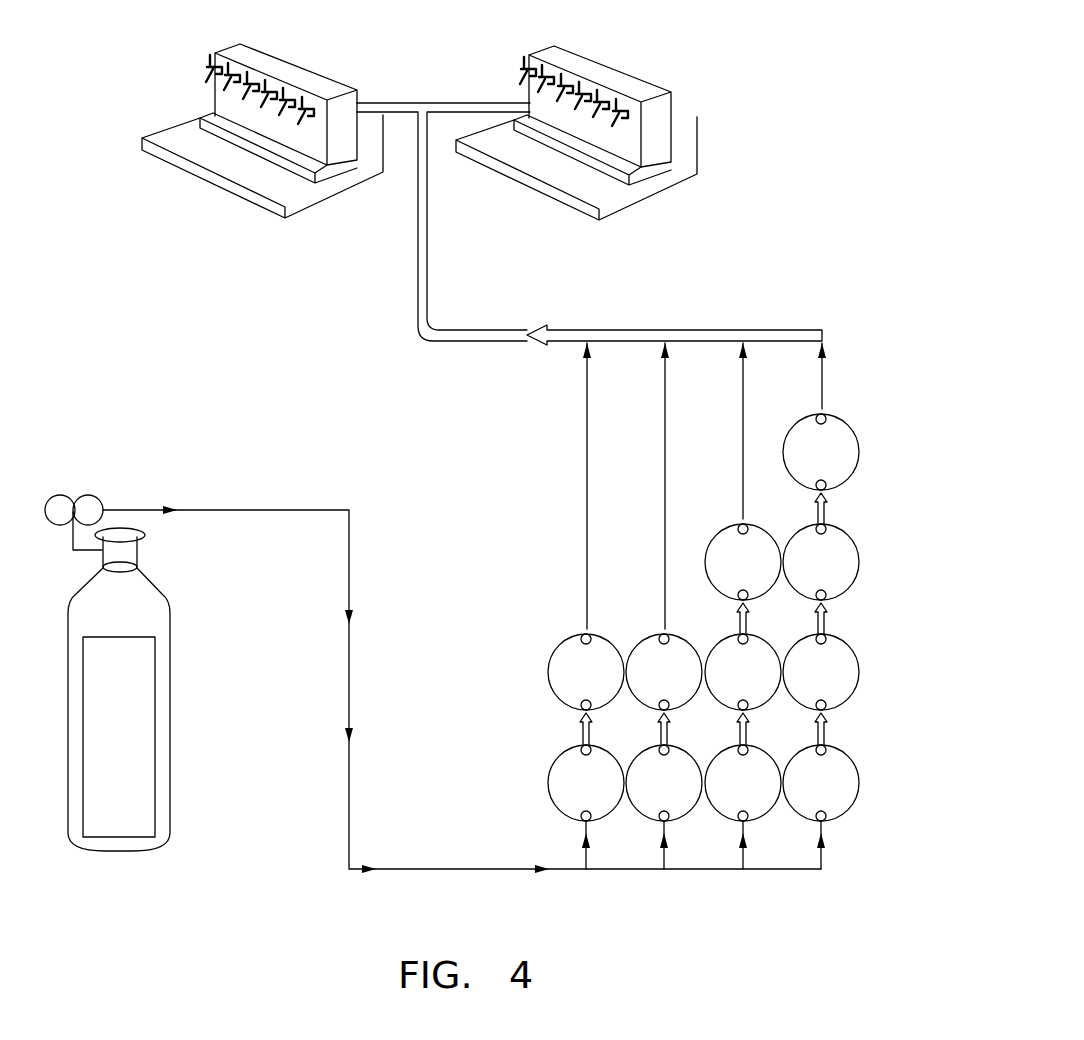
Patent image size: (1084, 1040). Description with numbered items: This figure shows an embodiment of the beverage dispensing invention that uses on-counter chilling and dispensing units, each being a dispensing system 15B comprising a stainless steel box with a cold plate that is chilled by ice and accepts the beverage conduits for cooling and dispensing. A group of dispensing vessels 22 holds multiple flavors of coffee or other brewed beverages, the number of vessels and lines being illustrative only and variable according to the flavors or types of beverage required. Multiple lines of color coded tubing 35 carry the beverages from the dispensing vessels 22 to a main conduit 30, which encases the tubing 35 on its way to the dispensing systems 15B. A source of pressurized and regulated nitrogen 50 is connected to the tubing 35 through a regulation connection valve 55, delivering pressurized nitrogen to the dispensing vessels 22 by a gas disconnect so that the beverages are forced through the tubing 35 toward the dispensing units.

The dispensing system 15B is at (288, 57).
The dispensing vessels 22 is at (792, 428).
The main conduit 30 is at (627, 330).
The color coded tubing 35 is at (823, 373).
The source of pressurized and regulated nitrogen 50 is at (145, 572).
The regulation connection valve 55 is at (88, 495).